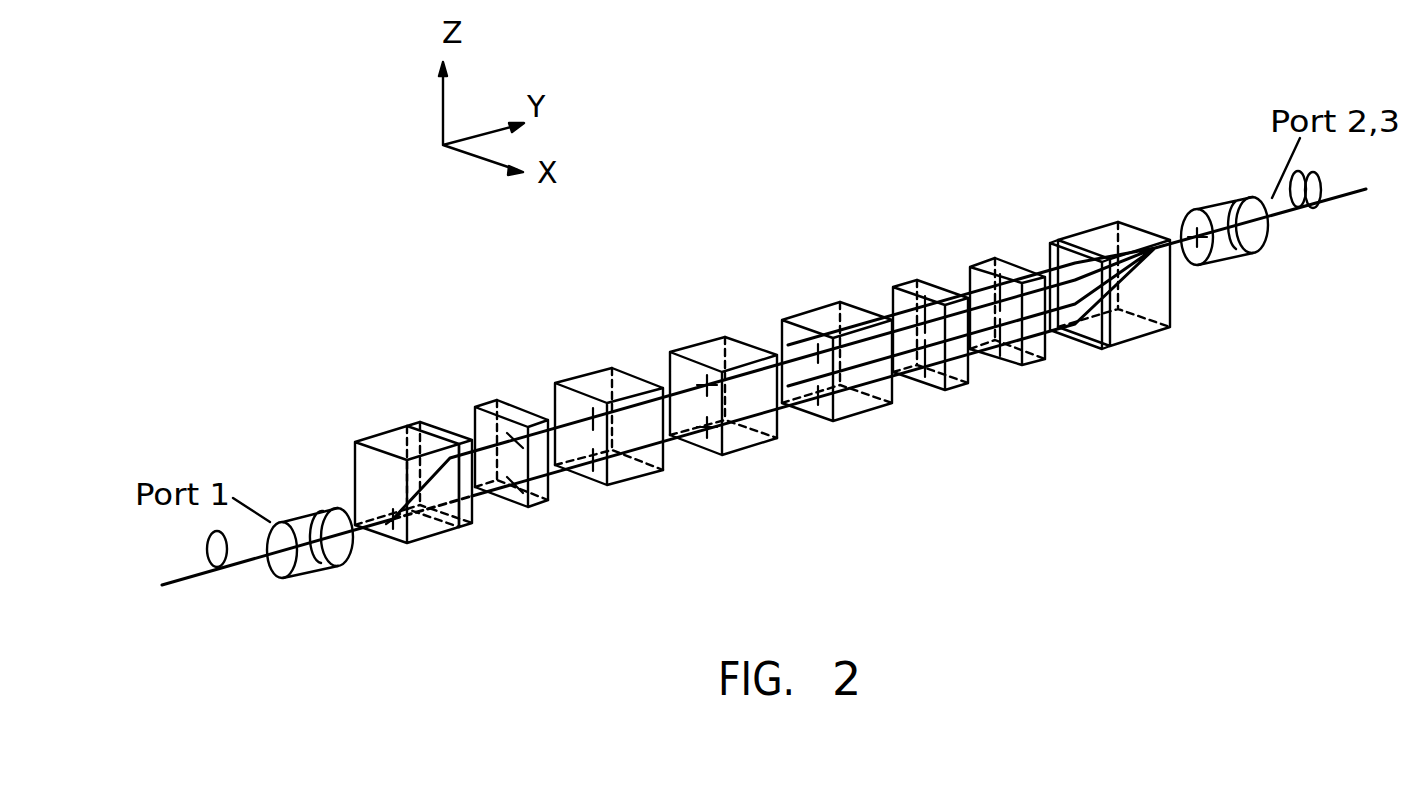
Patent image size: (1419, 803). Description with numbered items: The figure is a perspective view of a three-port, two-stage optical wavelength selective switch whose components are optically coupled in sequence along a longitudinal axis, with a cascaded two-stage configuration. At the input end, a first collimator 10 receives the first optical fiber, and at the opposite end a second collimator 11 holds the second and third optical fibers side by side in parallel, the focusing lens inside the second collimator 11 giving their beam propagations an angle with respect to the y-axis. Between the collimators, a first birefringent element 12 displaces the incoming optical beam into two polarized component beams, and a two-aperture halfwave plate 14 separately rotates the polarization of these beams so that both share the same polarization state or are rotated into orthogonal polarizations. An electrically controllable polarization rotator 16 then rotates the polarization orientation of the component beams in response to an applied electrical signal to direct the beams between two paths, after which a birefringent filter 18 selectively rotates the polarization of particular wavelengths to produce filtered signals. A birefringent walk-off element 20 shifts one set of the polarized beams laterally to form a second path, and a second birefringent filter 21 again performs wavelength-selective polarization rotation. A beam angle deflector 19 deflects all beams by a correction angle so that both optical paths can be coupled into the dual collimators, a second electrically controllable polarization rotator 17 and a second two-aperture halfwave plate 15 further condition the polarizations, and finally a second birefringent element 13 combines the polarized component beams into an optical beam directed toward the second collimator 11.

The first collimator 10 is at (305, 510).
The second collimator 11 is at (1210, 198).
The birefringent element 12 is at (382, 428).
The birefringent element 13 is at (1093, 222).
The two-aperture halfwave plate 14 is at (433, 418).
The two-aperture halfwave plate 15 is at (1052, 238).
The electrically controllable polarization rotator 16 is at (495, 400).
The electrically controllable polarization rotator 17 is at (985, 250).
The birefringent filter 18 is at (587, 368).
The beam angle deflector 19 is at (912, 272).
The birefringent walk-off element 20 is at (697, 340).
The birefringent filter 21 is at (815, 305).